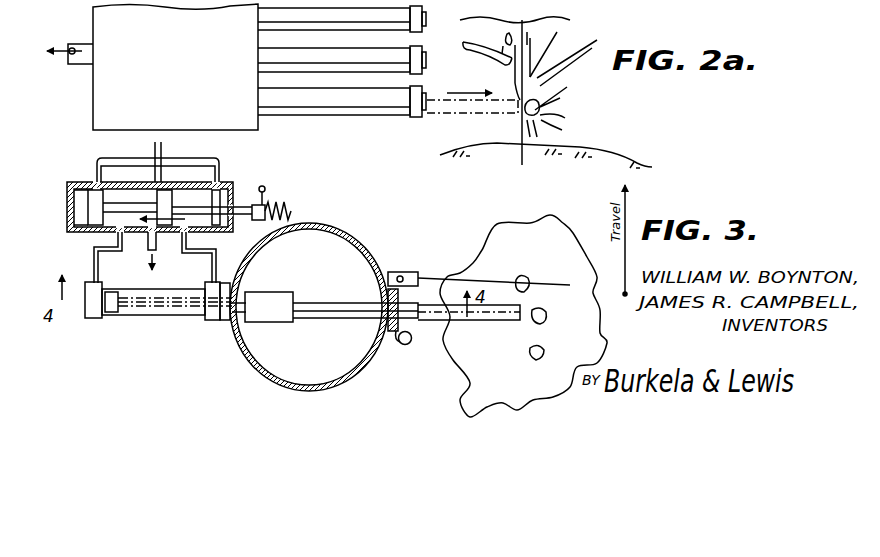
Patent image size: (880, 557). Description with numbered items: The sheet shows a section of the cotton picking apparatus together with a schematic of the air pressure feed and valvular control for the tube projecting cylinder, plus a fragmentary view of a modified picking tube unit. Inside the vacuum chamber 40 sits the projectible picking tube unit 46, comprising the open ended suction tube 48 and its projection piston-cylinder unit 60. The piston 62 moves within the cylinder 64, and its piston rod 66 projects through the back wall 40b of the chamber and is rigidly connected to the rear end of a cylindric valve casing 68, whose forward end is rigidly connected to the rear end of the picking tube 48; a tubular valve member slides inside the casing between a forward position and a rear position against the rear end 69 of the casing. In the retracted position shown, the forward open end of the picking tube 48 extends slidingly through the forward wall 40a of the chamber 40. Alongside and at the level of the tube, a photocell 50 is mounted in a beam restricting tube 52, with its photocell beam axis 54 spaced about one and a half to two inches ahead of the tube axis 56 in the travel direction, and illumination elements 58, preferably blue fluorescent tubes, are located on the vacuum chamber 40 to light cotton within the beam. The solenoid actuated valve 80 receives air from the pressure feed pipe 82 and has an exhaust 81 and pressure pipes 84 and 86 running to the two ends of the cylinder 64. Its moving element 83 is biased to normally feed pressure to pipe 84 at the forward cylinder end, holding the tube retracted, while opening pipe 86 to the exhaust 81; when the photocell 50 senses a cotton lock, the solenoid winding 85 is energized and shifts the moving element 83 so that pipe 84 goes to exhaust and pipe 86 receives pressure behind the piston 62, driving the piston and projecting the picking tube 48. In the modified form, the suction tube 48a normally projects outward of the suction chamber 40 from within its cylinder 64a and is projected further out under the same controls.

In FIG. 2A, the vacuum chamber 40 is at (190, 74).
In FIG. 3, the vacuum chamber 40 is at (374, 258).
In FIG. 3, the forward wall 40a is at (378, 355).
In FIG. 3, the back wall 40b is at (250, 340).
In FIG. 3, the projectible picking tube unit 46 is at (282, 323).
In FIG. 3, the projectible open ended suction tube 48 is at (365, 312).
In FIG. 2A, the suction tube 48a is at (473, 116).
In FIG. 3, the photocell 50 is at (407, 264).
In FIG. 3, the beam restricting tube 52 is at (420, 273).
In FIG. 3, the photocell beam axis 54 is at (500, 273).
In FIG. 3, the tube axis 56 is at (492, 323).
In FIG. 3, the illumination elements 58 is at (408, 345).
In FIG. 3, the projection piston-cylinder unit 60 is at (144, 315).
In FIG. 3, the piston 62 is at (112, 313).
In FIG. 3, the cylinder 64 is at (190, 312).
In FIG. 2A, the cylinder 64a is at (360, 68).
In FIG. 3, the piston rod 66 is at (172, 308).
In FIG. 3, the cylindric valve casing 68 is at (280, 300).
In FIG. 3, the rear end of casing 69 is at (250, 292).
In FIG. 3, the solenoid actuated valve 80 is at (223, 181).
In FIG. 3, the exhaust 81 is at (152, 262).
In FIG. 3, the pressure feed pipe 82 is at (163, 153).
In FIG. 3, the moving element 83 is at (112, 190).
In FIG. 3, the pressure pipe 84 is at (217, 256).
In FIG. 3, the solenoid winding 85 is at (291, 211).
In FIG. 3, the pressure pipe 86 is at (92, 252).